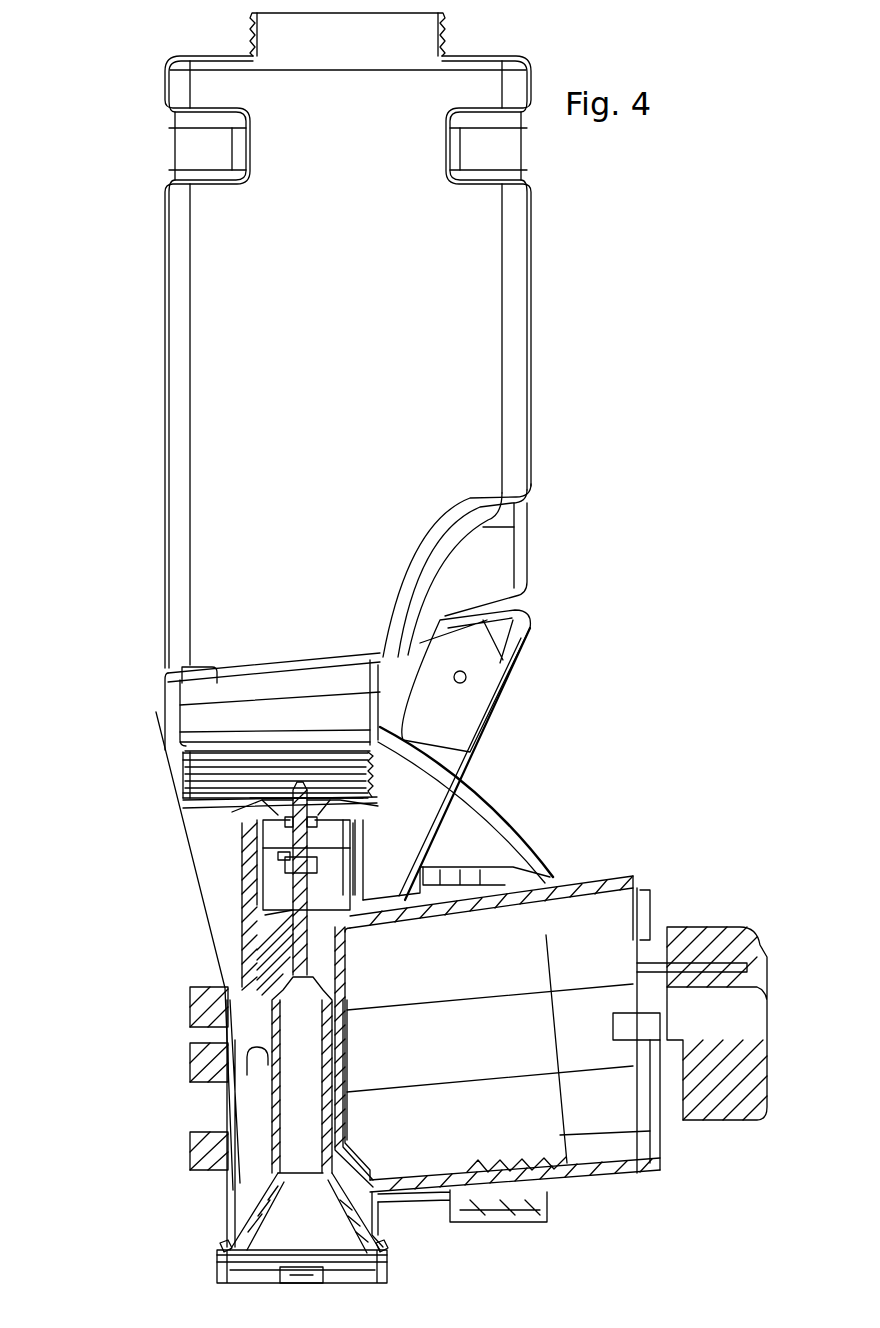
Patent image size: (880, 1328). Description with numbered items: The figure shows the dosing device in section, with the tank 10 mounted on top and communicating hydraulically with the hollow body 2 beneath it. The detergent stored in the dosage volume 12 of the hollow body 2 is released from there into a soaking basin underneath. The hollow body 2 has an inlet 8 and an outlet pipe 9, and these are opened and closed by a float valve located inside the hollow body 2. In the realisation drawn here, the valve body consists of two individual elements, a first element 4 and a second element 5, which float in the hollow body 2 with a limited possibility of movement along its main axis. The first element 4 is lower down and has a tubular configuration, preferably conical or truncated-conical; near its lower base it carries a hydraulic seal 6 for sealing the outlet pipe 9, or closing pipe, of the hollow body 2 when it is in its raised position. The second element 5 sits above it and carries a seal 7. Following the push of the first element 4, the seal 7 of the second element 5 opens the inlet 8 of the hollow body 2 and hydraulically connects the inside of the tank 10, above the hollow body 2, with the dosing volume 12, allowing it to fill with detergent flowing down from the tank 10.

The tank 10 is at (183, 446).
The hollow body 2 is at (258, 972).
The seal 7 is at (235, 822).
The second element 5 is at (298, 836).
The inlet pipe 8 is at (276, 888).
The dosage volume 12 is at (245, 1030).
The first element 4 is at (278, 1098).
The outlet pipe 9 is at (228, 1193).
The hydraulic seal 6 is at (222, 1248).